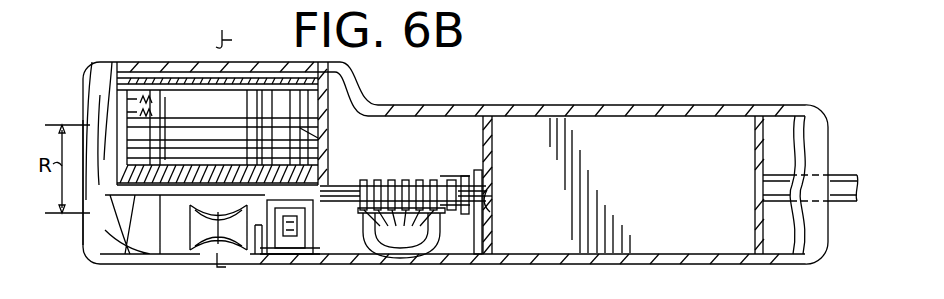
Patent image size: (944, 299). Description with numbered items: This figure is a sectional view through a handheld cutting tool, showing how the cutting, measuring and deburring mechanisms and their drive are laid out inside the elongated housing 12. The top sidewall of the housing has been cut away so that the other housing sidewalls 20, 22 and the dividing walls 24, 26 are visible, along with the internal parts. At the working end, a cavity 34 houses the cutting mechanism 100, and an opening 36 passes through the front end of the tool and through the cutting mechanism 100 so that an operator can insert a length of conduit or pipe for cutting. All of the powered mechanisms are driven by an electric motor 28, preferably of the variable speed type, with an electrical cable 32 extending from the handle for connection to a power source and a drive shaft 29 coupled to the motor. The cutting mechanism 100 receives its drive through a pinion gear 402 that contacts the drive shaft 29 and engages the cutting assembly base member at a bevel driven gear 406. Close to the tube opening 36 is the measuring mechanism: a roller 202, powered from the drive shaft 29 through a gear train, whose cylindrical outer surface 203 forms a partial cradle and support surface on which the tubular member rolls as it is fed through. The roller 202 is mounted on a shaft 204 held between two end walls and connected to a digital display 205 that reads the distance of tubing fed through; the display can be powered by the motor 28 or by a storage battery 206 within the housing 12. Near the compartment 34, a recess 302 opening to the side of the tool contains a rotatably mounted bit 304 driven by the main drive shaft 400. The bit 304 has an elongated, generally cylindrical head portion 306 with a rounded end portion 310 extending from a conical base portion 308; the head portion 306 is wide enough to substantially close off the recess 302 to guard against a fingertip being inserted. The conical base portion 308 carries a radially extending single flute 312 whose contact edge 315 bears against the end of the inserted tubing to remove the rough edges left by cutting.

The elongated housing 12 is at (545, 112).
The housing sidewall 22 is at (648, 114).
The dividing wall 24 is at (490, 147).
The electric motor 28 is at (685, 181).
The housing sidewall 20 is at (570, 257).
The electrical cable 32 is at (841, 182).
The cavity 34 is at (103, 135).
The opening 36 is at (200, 165).
The cutting mechanism 100 is at (152, 70).
The roller 202 is at (180, 232).
The outer surface 203 is at (220, 228).
The shaft 204 is at (248, 145).
The digital display 205 is at (283, 172).
The storage battery 206 is at (105, 262).
The dividing wall 26 is at (315, 133).
The drive shaft 29 is at (487, 222).
The recess 302 is at (480, 250).
The bit 304 is at (432, 200).
The head portion 306 is at (440, 205).
The conical base portion 308 is at (372, 222).
The rounded end portion 310 is at (372, 236).
The flute 312 is at (405, 180).
The contact edge 315 is at (406, 174).
The main drive shaft 400 is at (470, 200).
The pinion gear 402 is at (300, 188).
The bevel driven gear 406 is at (108, 145).